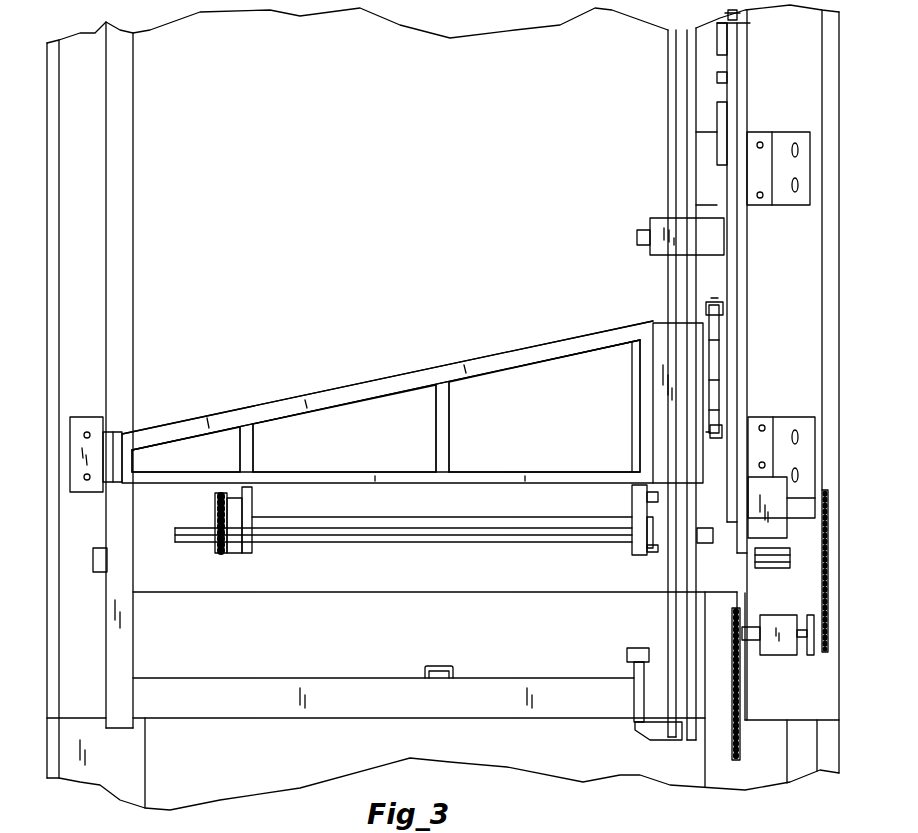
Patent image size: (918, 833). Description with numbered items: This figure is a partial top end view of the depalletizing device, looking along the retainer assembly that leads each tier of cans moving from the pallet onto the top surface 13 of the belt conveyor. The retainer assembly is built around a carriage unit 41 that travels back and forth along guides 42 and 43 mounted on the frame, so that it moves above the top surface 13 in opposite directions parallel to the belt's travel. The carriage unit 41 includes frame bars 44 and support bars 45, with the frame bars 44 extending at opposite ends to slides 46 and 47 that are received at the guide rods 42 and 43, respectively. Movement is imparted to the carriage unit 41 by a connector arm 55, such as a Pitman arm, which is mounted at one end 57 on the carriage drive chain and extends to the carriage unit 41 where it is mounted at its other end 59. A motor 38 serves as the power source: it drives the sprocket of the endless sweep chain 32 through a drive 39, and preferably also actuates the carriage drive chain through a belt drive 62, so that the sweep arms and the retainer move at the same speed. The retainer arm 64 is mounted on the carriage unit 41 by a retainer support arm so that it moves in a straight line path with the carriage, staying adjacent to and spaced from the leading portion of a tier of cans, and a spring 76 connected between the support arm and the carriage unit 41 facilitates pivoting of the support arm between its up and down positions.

The top surface 13 is at (392, 159).
The endless chain 32 is at (740, 730).
The motor 38 is at (785, 620).
The drive 39 is at (745, 637).
The carriage unit 41 is at (490, 355).
The guide 42 is at (125, 168).
The guide 43 is at (667, 90).
The frame bars 44 is at (328, 396).
The support bars 45 is at (248, 448).
The slide 46 is at (118, 440).
The slide 47 is at (662, 332).
The connector arm 55 is at (714, 360).
The end 57 is at (718, 305).
The end 59 is at (716, 432).
The belt drive 62 is at (829, 558).
The retainer arm 64 is at (553, 530).
The spring 76 is at (215, 512).